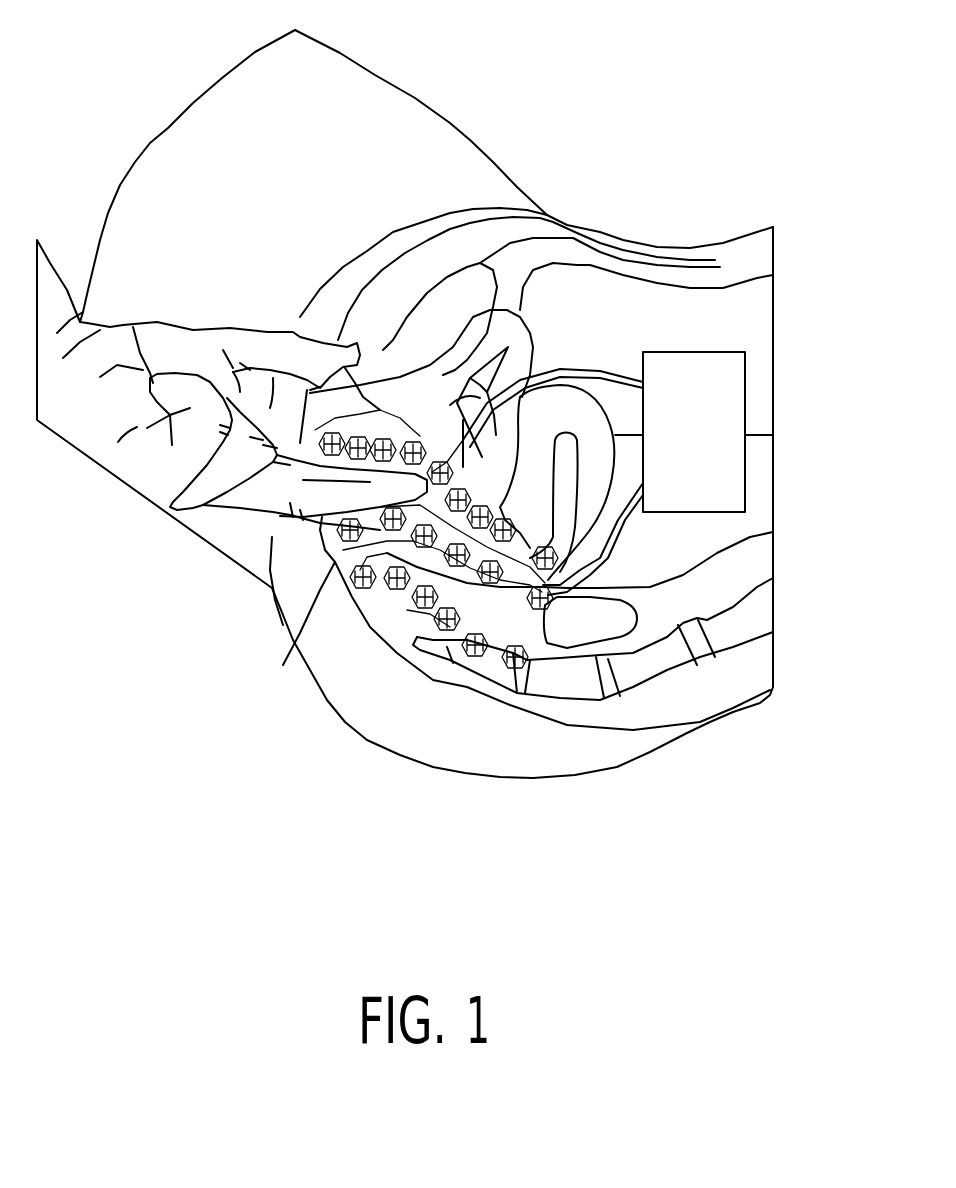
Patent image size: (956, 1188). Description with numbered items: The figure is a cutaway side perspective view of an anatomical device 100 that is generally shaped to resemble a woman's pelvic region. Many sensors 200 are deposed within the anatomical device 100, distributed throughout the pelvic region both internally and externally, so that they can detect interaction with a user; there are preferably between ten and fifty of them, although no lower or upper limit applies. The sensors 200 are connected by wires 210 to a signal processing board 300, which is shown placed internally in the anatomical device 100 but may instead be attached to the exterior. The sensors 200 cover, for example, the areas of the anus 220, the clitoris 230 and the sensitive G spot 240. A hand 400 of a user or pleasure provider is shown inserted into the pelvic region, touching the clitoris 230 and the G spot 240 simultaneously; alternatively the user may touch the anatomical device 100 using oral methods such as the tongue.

The anatomical device 100 is at (447, 404).
The sensors 200 is at (312, 394).
The wires 210 is at (565, 370).
The anus 220 is at (364, 591).
The clitoris 230 is at (264, 290).
The G spot 240 is at (438, 308).
The signal processing board 300 is at (694, 432).
The hand 400 is at (237, 451).